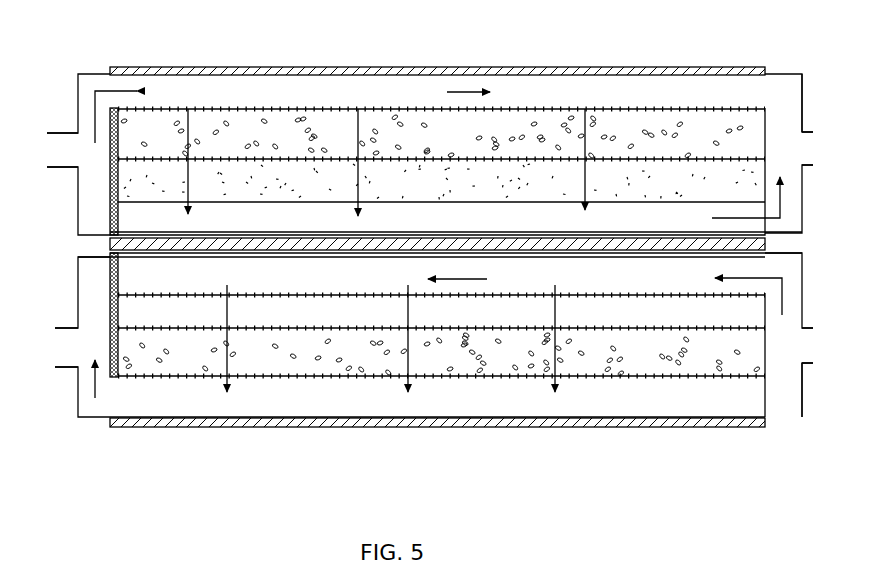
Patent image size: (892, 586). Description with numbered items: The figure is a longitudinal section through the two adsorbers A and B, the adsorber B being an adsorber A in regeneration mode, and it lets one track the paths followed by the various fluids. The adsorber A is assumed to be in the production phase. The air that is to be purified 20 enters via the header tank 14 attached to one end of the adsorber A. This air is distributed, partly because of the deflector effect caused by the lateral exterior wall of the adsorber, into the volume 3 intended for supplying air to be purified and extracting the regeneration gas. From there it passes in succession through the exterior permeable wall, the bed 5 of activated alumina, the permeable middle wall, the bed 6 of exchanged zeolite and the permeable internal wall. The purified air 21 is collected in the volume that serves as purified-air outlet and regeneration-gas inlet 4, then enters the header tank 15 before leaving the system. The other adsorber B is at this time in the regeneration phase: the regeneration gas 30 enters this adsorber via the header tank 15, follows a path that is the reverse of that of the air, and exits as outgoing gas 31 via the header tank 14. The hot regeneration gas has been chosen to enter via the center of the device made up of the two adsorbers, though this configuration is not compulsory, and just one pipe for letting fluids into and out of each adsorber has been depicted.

The adsorber A is at (222, 85).
The adsorber B is at (230, 395).
The volume V1A, V1B 3 is at (395, 93).
The purified-air outlet and regeneration-gas inlet 4 is at (703, 230).
The bed of activated alumina 5 is at (290, 130).
The bed of zeolite 6 is at (503, 177).
The header tank 14 is at (95, 197).
The header tank 15 is at (788, 108).
The air that is to be purified 20 is at (85, 150).
The purified air 21 is at (792, 148).
The regeneration gas 30 is at (780, 345).
The second gas outlet 31 is at (89, 346).